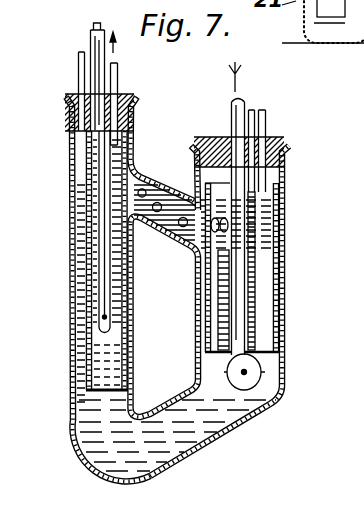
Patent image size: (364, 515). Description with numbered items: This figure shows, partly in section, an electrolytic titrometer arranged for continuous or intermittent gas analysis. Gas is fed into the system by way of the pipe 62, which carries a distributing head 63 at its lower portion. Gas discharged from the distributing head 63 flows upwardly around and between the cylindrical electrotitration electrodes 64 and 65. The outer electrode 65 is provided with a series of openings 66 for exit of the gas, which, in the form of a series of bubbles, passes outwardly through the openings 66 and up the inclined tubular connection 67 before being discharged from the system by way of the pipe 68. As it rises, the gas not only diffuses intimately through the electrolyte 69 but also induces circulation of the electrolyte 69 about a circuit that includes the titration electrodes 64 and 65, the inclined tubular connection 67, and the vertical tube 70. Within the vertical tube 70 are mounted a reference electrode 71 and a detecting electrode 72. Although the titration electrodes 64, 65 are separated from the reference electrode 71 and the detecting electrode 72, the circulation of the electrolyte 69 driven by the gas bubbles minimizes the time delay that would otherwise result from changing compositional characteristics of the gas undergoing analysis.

The pipe 62 is at (246, 108).
The distributing head 63 is at (262, 373).
The cylindrical electrotitration electrode 64 is at (284, 267).
The outer electrode 65 is at (274, 327).
The openings 66 is at (285, 193).
The inclined tubular connection 67 is at (160, 183).
The pipe 68 is at (118, 80).
The electrolyte 69 is at (203, 413).
The vertical tube 70 is at (75, 290).
The reference electrode 71 is at (104, 303).
The detecting electrode 72 is at (103, 389).